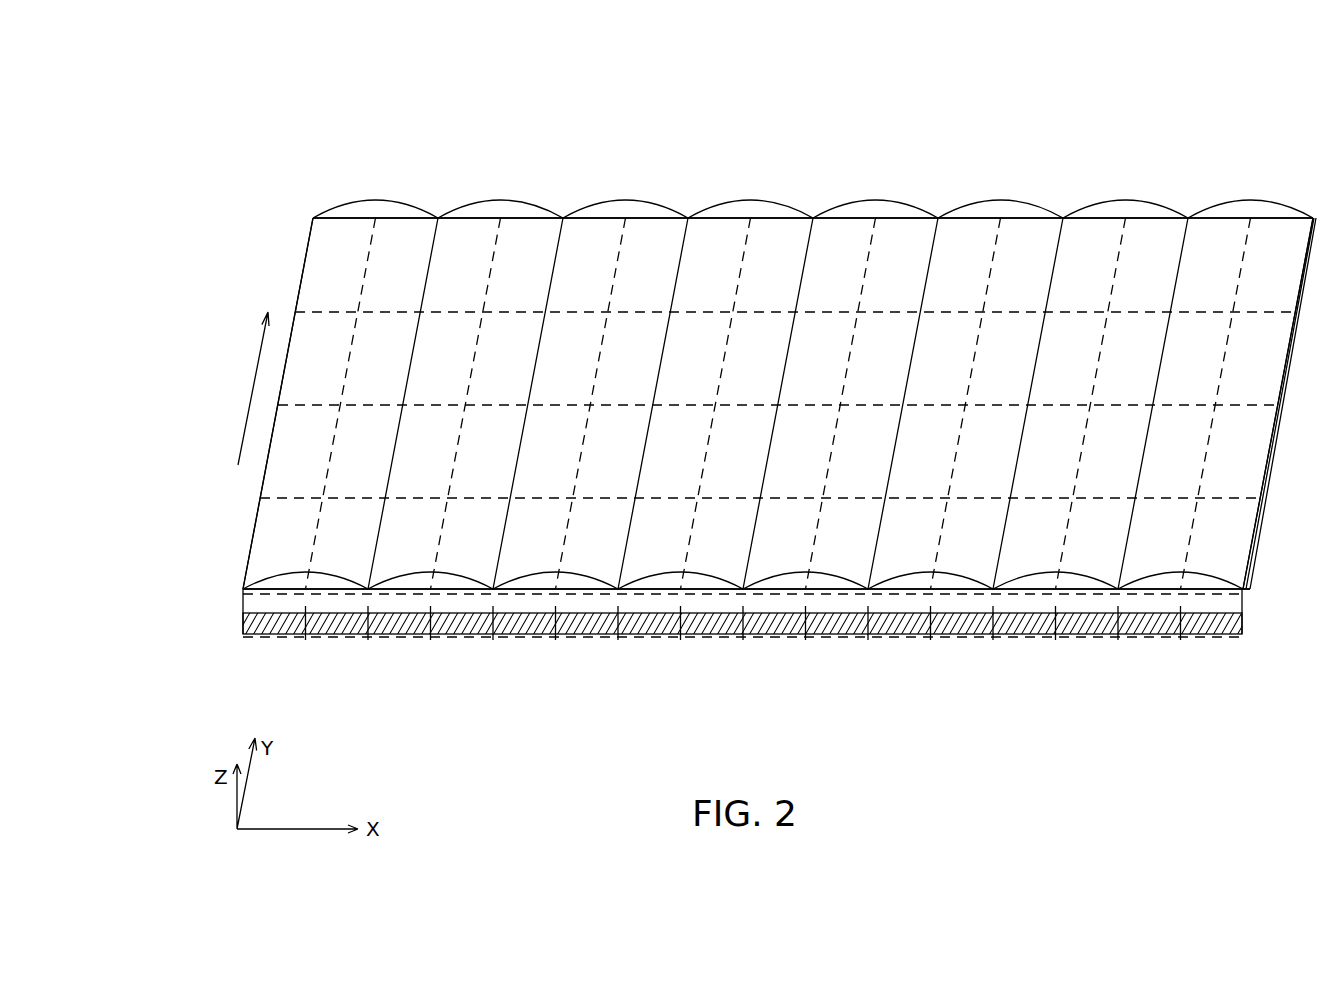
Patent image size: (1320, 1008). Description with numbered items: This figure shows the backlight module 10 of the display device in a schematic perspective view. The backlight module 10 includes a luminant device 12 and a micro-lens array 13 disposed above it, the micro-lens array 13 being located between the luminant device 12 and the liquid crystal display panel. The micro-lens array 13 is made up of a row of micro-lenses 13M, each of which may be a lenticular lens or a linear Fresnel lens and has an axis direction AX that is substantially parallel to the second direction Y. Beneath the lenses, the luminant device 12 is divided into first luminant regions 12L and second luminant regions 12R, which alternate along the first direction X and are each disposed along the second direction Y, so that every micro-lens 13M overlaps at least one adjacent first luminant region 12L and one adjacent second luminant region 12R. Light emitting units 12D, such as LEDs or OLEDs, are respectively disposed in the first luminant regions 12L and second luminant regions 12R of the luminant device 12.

The backlight module 10 is at (225, 130).
The luminant device 12 is at (228, 604).
The micro-lens array 13 is at (1312, 146).
The micro-lens 13M is at (1250, 208).
The first luminant region 12L is at (1229, 270).
The second luminant region 12R is at (1293, 270).
The light emitting unit 12D is at (1205, 655).
The axis direction AX is at (258, 375).